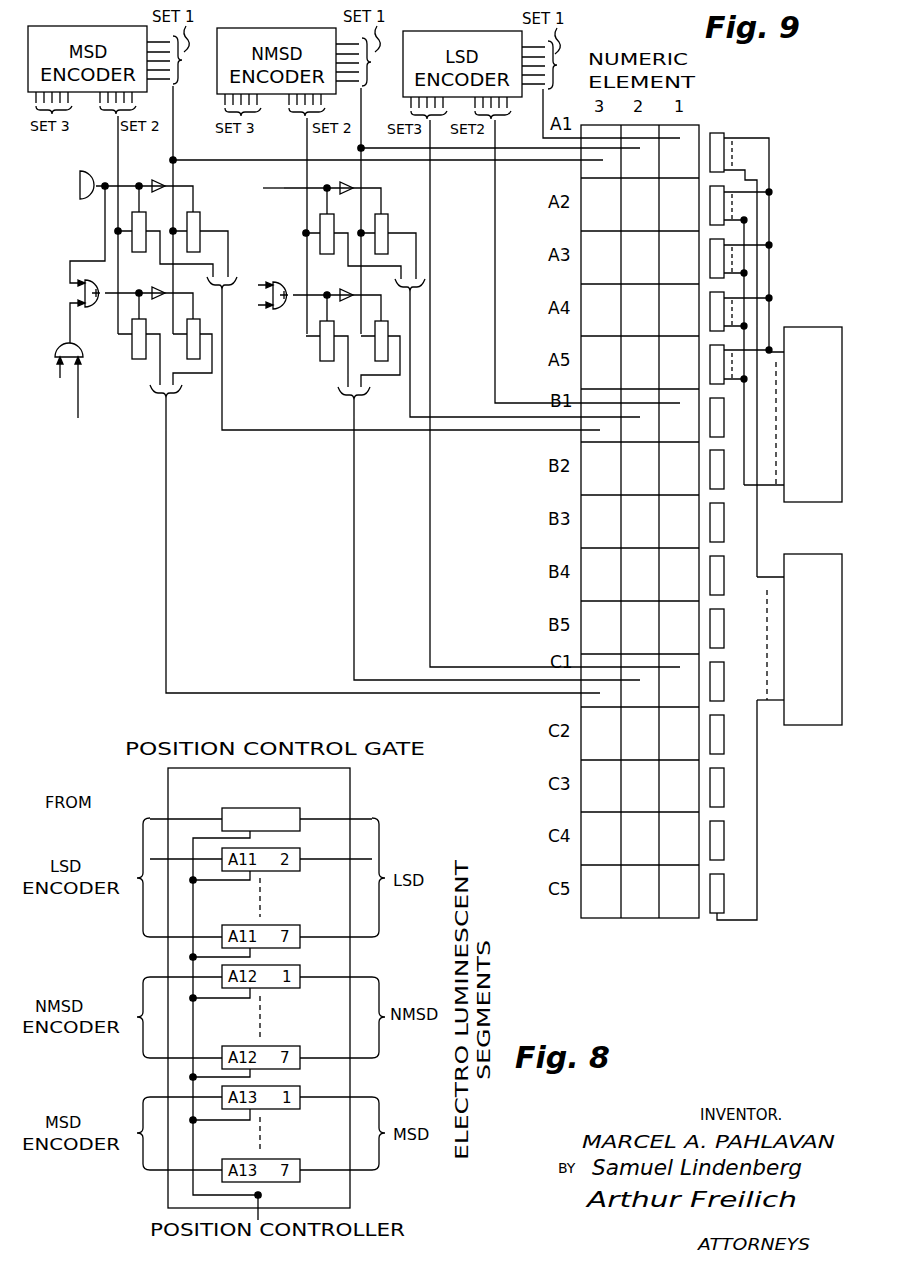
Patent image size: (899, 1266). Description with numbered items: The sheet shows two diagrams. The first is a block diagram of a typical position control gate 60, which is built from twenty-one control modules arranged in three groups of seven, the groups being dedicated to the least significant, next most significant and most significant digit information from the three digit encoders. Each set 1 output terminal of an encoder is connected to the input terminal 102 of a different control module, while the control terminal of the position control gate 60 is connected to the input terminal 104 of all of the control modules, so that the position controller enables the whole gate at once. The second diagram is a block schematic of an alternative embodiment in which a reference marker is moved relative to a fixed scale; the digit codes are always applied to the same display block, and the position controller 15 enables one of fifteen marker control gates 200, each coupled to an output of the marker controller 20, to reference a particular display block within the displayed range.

In FIG. 9, the marker control gates 200 is at (718, 133).
In FIG. 9, the set 1 output terminals 1 is at (770, 517).
In FIG. 9, the MRK controller 20 is at (793, 418).
In FIG. 9, the position controller 15 is at (799, 639).
In FIG. 8, the position control gate 60 is at (352, 793).
In FIG. 8, the input terminal 102 is at (214, 818).
In FIG. 8, the input terminal 104 is at (218, 843).